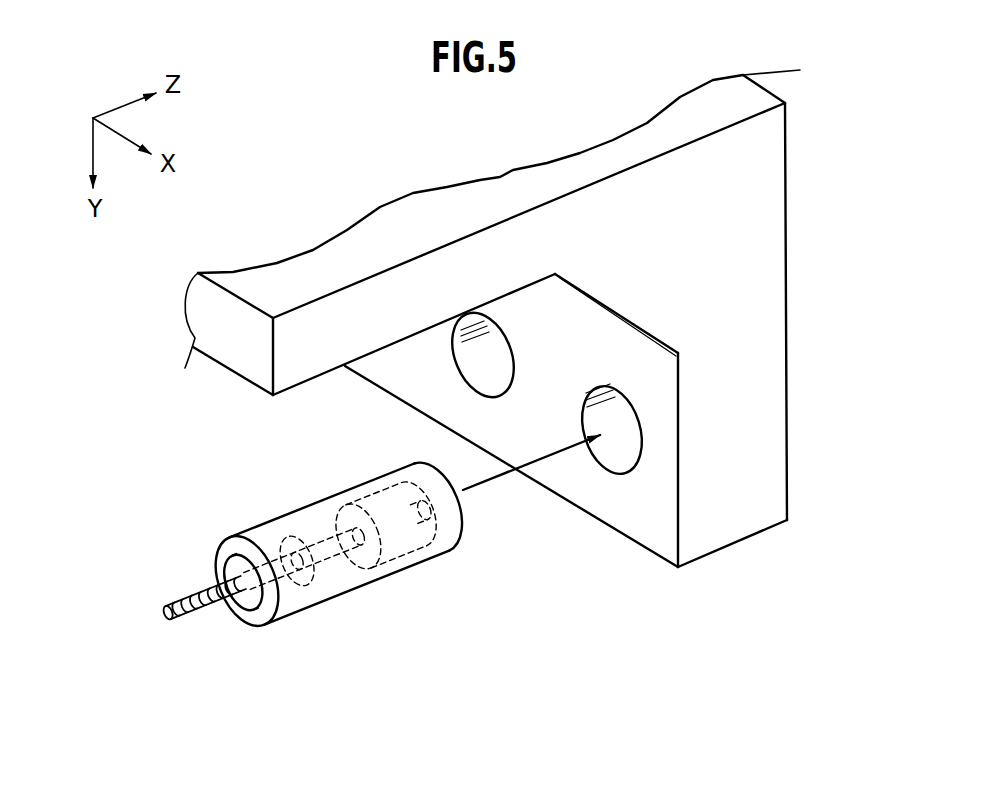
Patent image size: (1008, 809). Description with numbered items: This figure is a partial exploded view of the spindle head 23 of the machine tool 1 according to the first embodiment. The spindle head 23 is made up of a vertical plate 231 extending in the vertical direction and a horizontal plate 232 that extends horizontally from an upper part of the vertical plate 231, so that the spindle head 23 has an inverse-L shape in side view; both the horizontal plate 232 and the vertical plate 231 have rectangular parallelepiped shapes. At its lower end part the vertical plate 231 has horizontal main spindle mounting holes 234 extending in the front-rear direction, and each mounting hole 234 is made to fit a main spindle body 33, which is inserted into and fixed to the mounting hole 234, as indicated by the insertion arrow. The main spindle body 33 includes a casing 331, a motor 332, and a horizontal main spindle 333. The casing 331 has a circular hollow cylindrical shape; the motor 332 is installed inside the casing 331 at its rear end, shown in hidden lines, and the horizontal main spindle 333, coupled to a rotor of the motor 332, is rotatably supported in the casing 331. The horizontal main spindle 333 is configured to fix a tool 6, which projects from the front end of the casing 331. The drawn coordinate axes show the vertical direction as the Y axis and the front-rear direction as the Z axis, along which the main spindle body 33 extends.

The robot / device 1 is at (305, 165).
The spindle head 23 is at (800, 180).
The vertical plate 231 is at (770, 373).
The horizontal plate 232 is at (502, 197).
The horizontal main spindle mounting hole 234 is at (494, 386).
The main spindle body 33 is at (288, 511).
The casing 331 is at (362, 585).
The motor 332 is at (402, 555).
The horizontal main spindle 333 is at (267, 550).
The tool 6 is at (183, 598).